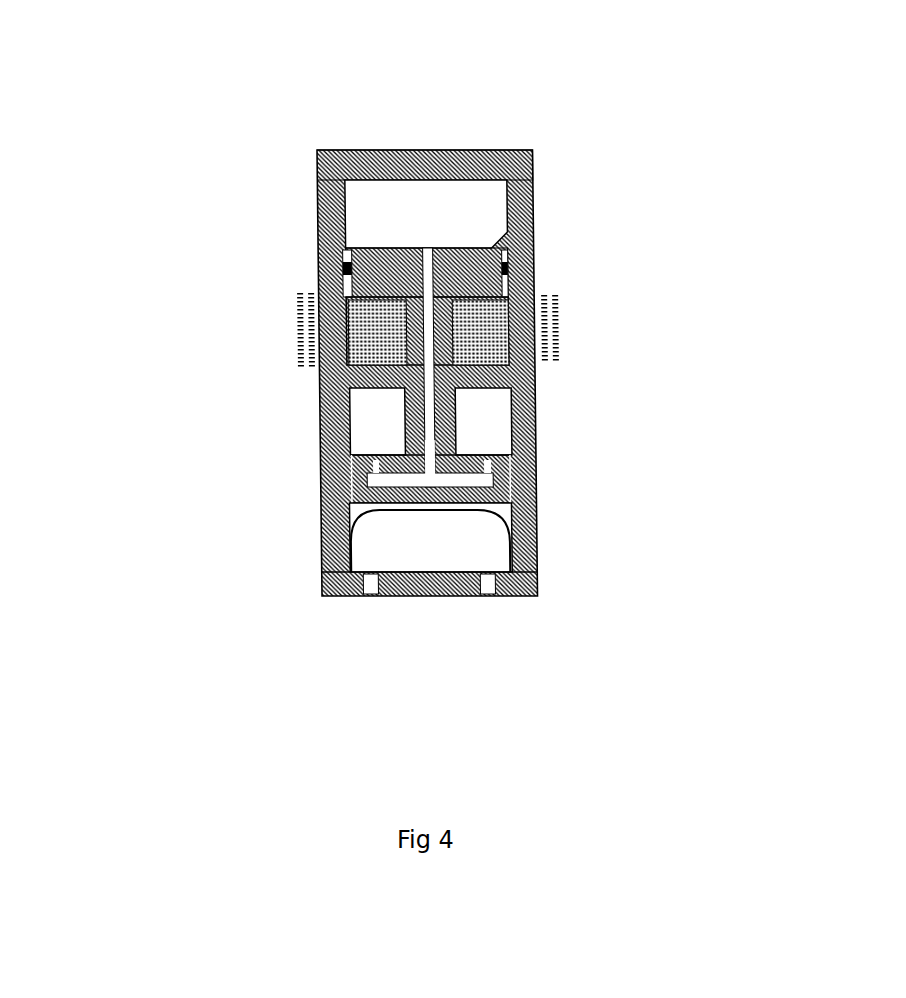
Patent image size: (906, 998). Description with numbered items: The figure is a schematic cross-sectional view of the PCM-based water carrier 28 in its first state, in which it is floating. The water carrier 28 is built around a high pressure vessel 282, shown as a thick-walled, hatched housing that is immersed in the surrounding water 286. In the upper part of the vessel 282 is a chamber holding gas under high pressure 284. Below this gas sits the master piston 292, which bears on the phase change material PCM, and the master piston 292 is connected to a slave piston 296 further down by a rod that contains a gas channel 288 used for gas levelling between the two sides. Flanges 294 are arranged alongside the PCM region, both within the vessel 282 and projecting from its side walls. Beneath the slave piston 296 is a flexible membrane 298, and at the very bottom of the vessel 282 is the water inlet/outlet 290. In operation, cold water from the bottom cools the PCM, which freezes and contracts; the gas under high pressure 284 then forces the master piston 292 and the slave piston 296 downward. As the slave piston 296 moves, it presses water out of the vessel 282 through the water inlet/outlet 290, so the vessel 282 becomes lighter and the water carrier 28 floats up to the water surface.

The water carrier 28 is at (138, 66).
The high pressure vessel 282 is at (319, 152).
The gas under high pressure 284 is at (363, 218).
The surrounding water 286 is at (278, 435).
The gas channel 288 is at (405, 403).
The water inlet/outlet 290 is at (366, 578).
The master piston 292 is at (492, 248).
The phase change material PCM is at (510, 285).
The flanges 294 is at (540, 346).
The slave piston 296 is at (510, 482).
The flexible membrane 298 is at (505, 515).